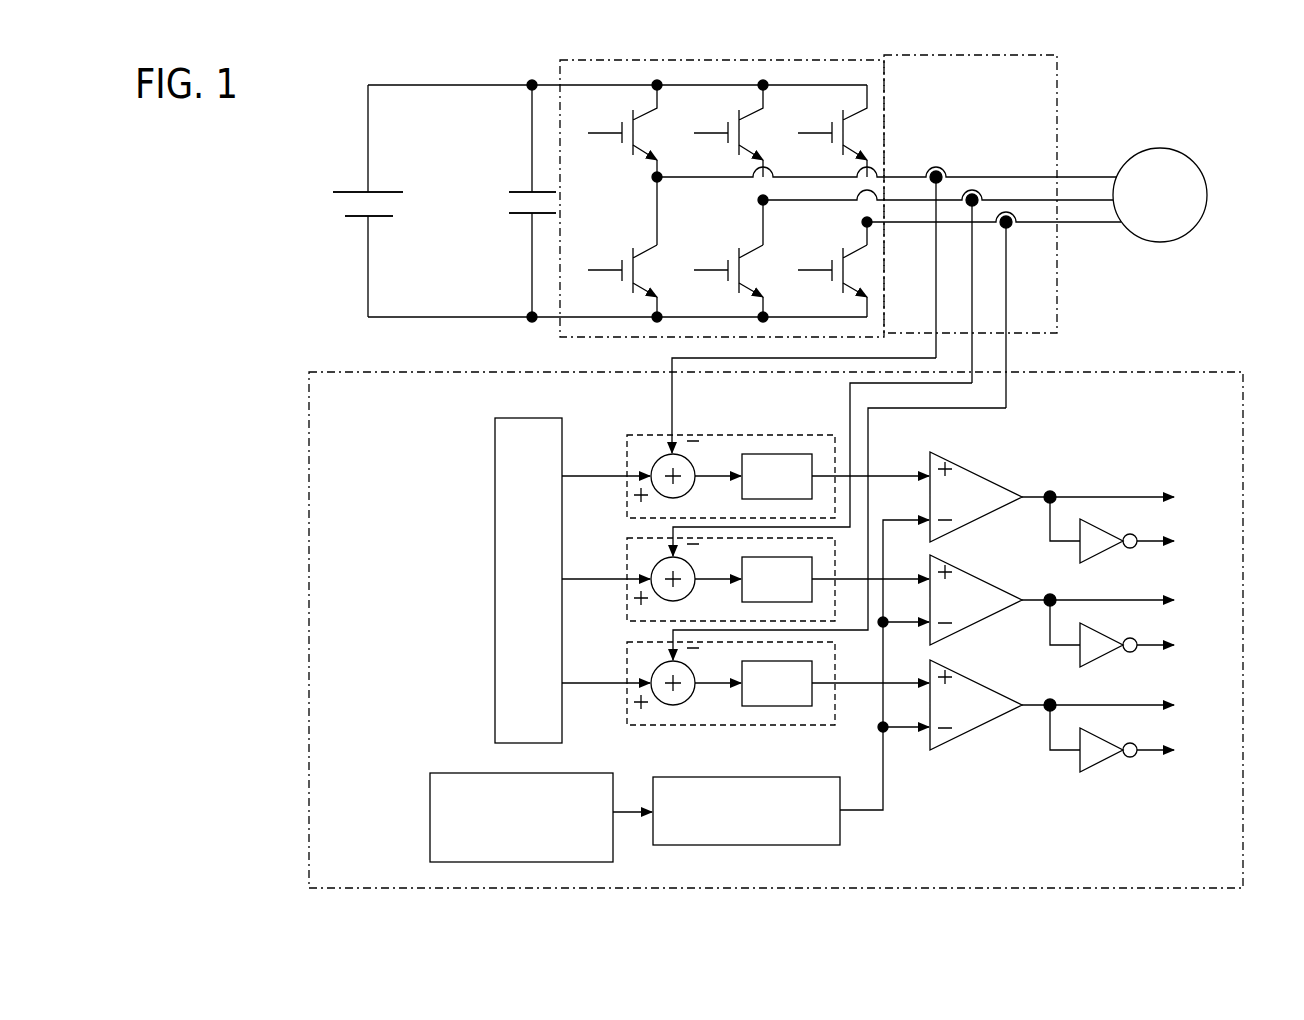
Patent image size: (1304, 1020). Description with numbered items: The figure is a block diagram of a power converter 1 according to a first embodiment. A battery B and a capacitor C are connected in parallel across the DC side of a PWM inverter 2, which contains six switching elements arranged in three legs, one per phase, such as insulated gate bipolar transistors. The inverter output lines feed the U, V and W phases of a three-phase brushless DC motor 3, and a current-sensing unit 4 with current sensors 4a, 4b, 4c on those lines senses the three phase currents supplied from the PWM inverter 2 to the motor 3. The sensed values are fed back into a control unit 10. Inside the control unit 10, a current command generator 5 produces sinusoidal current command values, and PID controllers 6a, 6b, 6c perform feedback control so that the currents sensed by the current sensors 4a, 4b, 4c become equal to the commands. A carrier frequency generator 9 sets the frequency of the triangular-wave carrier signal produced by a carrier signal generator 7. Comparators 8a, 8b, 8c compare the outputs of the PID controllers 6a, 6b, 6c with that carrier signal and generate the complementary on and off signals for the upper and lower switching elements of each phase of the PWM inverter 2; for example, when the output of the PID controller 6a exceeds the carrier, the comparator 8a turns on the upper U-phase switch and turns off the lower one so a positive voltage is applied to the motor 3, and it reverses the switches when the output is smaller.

The power converter 1 is at (1248, 112).
The PWM inverter 2 is at (560, 337).
The motor 3 is at (1183, 150).
The current-sensing unit 4 is at (1058, 128).
The current sensor 4a is at (930, 166).
The current sensor 4b is at (969, 189).
The current sensor 4c is at (1005, 210).
The current command generator 5 is at (495, 538).
The PID controller 6a is at (627, 448).
The PID controller 6b is at (627, 552).
The PID controller 6c is at (627, 650).
The carrier signal generator 7 is at (840, 830).
The comparator 8a is at (994, 452).
The comparator 8b is at (994, 555).
The comparator 8c is at (994, 684).
The carrier frequency generator 9 is at (430, 800).
The control unit 10 is at (1122, 371).
The battery B is at (385, 178).
The capacitor C is at (515, 232).